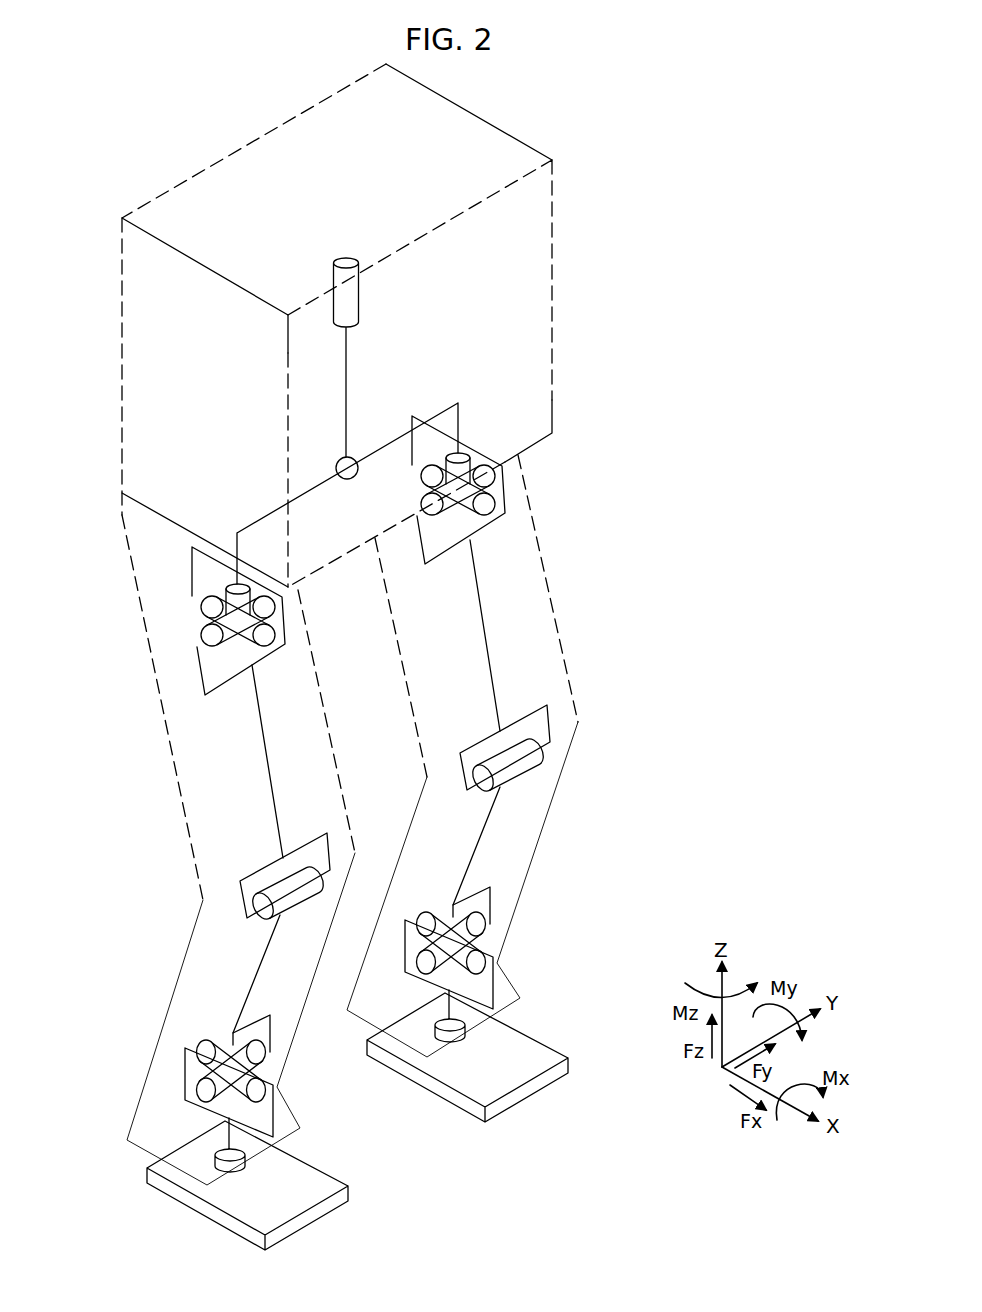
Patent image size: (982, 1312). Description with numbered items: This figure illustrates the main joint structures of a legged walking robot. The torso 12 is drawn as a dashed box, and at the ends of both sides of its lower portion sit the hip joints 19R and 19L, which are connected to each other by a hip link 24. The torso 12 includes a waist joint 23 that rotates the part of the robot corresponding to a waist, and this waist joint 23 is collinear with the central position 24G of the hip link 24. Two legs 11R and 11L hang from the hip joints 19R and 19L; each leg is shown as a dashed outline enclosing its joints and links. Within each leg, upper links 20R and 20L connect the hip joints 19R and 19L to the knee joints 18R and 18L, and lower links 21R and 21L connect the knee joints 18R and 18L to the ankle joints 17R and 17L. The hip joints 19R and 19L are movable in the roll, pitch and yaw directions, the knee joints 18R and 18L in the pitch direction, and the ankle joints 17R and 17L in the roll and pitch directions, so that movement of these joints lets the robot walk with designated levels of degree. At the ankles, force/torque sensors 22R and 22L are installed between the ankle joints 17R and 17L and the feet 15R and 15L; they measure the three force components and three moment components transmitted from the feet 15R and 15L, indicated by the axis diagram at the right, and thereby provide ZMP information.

The torso 12 is at (552, 323).
The waist joint 23 is at (337, 283).
The hip link 24 is at (392, 440).
The central position of hip link 24G is at (336, 463).
The left hip joint 19L is at (502, 478).
The right hip joint 19R is at (213, 605).
The left upper link 20L is at (483, 623).
The right upper link 20R is at (250, 718).
The left leg 11L is at (568, 688).
The right leg 11R is at (187, 810).
The left knee joint 18L is at (517, 763).
The right knee joint 18R is at (265, 892).
The left lower link 21L is at (488, 830).
The right lower link 21R is at (255, 970).
The left ankle joint 17L is at (477, 935).
The right ankle joint 17R is at (207, 1068).
The left force/torque sensor 22L is at (465, 1018).
The right force/torque sensor 22R is at (212, 1163).
The left foot 15L is at (537, 1082).
The right foot 15R is at (313, 1215).